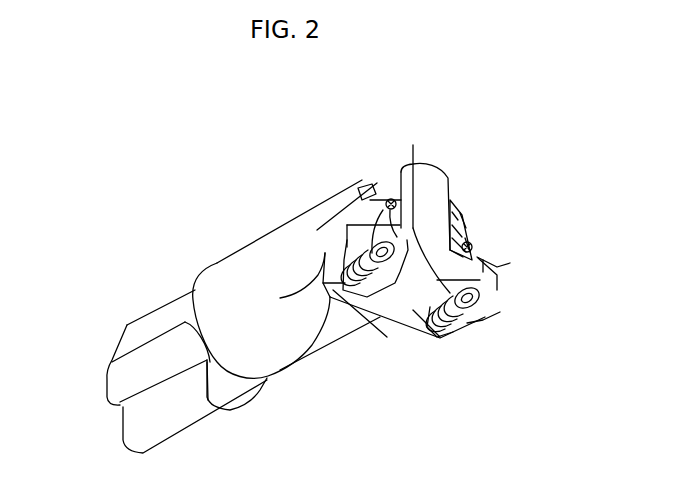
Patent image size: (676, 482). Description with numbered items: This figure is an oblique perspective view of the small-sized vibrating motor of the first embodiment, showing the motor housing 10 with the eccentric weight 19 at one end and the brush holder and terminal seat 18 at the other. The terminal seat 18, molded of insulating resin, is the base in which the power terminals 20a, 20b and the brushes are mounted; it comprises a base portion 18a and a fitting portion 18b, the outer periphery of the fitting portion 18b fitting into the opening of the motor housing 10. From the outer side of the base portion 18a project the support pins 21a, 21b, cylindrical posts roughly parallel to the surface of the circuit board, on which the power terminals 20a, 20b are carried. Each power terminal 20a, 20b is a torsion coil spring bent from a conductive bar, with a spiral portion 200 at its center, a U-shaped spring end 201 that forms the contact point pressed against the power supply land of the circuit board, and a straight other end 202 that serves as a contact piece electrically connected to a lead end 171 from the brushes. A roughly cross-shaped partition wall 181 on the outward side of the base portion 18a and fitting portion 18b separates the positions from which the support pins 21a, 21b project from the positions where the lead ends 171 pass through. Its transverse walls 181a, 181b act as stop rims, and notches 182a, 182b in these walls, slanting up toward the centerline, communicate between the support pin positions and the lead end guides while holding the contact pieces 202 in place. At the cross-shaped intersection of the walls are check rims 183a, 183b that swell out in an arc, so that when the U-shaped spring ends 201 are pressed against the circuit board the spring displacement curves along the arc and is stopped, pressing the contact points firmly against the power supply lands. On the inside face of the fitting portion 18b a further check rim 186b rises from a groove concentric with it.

The motor housing 10 is at (210, 261).
The eccentric weight 19 is at (142, 324).
The brush holder and terminal seat 18 is at (450, 163).
The base portion 18a is at (399, 334).
The fitting portion 18b is at (363, 195).
The partition wall 181 is at (440, 188).
The transverse wall 181a is at (362, 195).
The transverse wall 181b is at (490, 268).
The notch 182a is at (398, 182).
The notch 182b is at (483, 273).
The check rim 183a is at (392, 307).
The check rim 183b is at (480, 295).
The check rim 186b is at (362, 190).
The lead end 171 is at (386, 198).
The spiral portion 200 is at (320, 287).
The U-shaped spring end 201 is at (378, 320).
The contact piece 202 is at (292, 223).
The power terminal 20a is at (322, 338).
The power terminal 20b is at (487, 316).
The support pin 21a is at (347, 242).
The support pin 21b is at (485, 300).